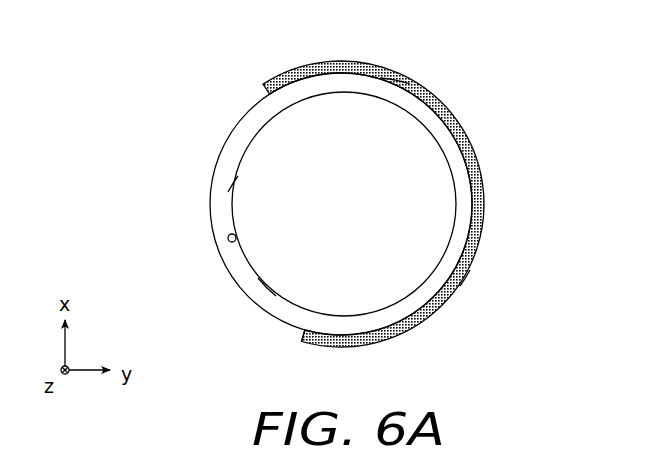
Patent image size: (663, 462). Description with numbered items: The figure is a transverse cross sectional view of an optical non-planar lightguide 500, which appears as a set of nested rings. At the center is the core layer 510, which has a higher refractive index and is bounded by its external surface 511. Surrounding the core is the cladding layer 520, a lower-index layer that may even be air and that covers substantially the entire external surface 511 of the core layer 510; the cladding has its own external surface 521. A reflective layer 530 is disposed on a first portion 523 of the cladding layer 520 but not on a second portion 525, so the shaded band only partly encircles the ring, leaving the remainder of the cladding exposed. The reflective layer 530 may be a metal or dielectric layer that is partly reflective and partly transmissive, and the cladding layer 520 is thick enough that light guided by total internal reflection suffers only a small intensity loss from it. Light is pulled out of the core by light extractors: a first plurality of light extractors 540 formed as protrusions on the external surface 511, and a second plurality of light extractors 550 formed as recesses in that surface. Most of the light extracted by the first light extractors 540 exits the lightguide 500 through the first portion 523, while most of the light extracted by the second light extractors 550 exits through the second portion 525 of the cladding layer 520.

The optical non-planar lightguide 500 is at (188, 106).
The core layer 510 is at (272, 253).
The external surface of the core layer 511 is at (268, 287).
The cladding layer 520 is at (440, 277).
The external surface of the cladding layer 521 is at (280, 323).
The first portion of the cladding layer 523 is at (395, 95).
The second portion of the cladding layer 525 is at (253, 115).
The reflective layer 530 is at (445, 100).
The first plurality of light extractors 540 is at (228, 239).
The second plurality of light extractors 550 is at (248, 175).